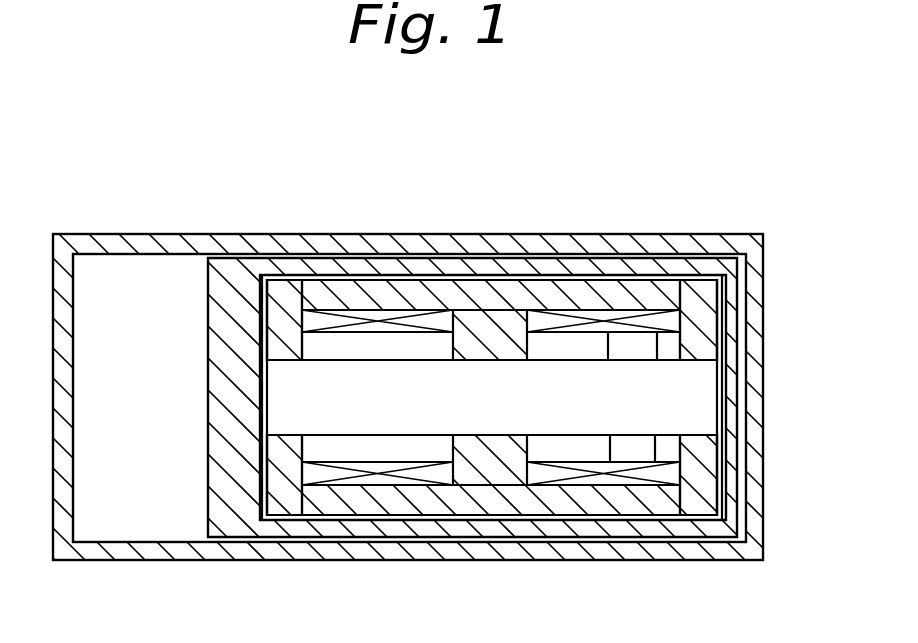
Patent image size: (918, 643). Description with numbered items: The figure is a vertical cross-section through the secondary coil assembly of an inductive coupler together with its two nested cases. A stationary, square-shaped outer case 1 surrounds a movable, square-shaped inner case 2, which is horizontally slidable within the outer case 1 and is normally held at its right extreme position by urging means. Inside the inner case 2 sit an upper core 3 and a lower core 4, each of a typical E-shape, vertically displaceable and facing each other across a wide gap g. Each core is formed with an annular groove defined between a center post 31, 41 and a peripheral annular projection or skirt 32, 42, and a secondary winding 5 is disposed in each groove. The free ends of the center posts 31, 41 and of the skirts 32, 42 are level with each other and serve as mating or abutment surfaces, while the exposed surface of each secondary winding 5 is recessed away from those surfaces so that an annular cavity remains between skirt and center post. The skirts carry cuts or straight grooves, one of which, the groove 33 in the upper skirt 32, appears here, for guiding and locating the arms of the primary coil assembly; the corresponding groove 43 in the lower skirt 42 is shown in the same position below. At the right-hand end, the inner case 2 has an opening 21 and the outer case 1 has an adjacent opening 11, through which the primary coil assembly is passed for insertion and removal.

The outer case 1 is at (770, 281).
The opening 11 is at (753, 382).
The inner case 2 is at (735, 550).
The opening 21 is at (732, 407).
The upper core 3 is at (483, 307).
The center post 31 is at (497, 333).
The annular skirt 32 is at (289, 335).
The straight groove 33 is at (629, 352).
The lower core 4 is at (483, 488).
The center post 41 is at (495, 448).
The annular skirt 42 is at (292, 462).
The lower spacer 43 is at (633, 447).
The secondary winding 5 is at (379, 318).
The gap g is at (480, 397).